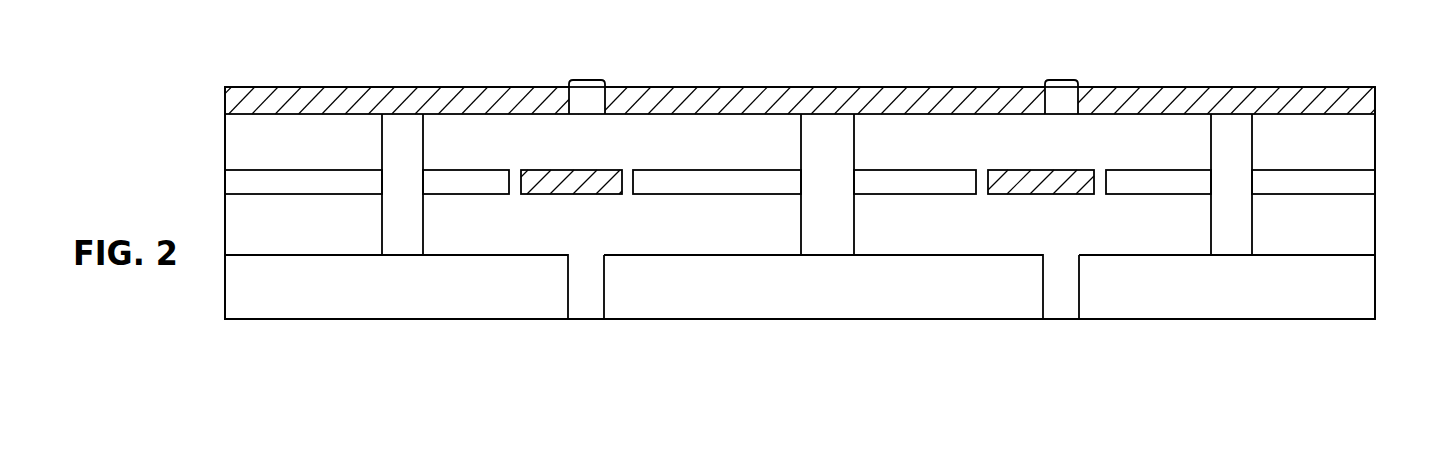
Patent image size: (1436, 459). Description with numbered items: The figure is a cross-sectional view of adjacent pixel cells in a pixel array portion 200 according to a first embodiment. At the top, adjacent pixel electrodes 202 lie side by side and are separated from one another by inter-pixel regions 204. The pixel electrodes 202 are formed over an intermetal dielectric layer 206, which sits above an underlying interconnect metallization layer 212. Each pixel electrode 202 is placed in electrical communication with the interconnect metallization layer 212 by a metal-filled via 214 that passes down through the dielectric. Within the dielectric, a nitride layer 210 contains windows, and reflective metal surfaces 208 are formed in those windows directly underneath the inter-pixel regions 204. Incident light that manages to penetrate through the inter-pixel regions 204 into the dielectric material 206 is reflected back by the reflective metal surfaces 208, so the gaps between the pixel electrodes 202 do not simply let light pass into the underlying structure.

The pixel array portion 200 is at (787, 49).
The pixel electrodes 202 is at (492, 97).
The inter-pixel regions 204 is at (588, 80).
The intermetal dielectric layer 206 is at (1360, 138).
The reflective metal surfaces 208 is at (597, 180).
The nitride layer 210 is at (1362, 177).
The interconnect metallization layer 212 is at (1355, 279).
The metal-filled vias 214 is at (410, 130).